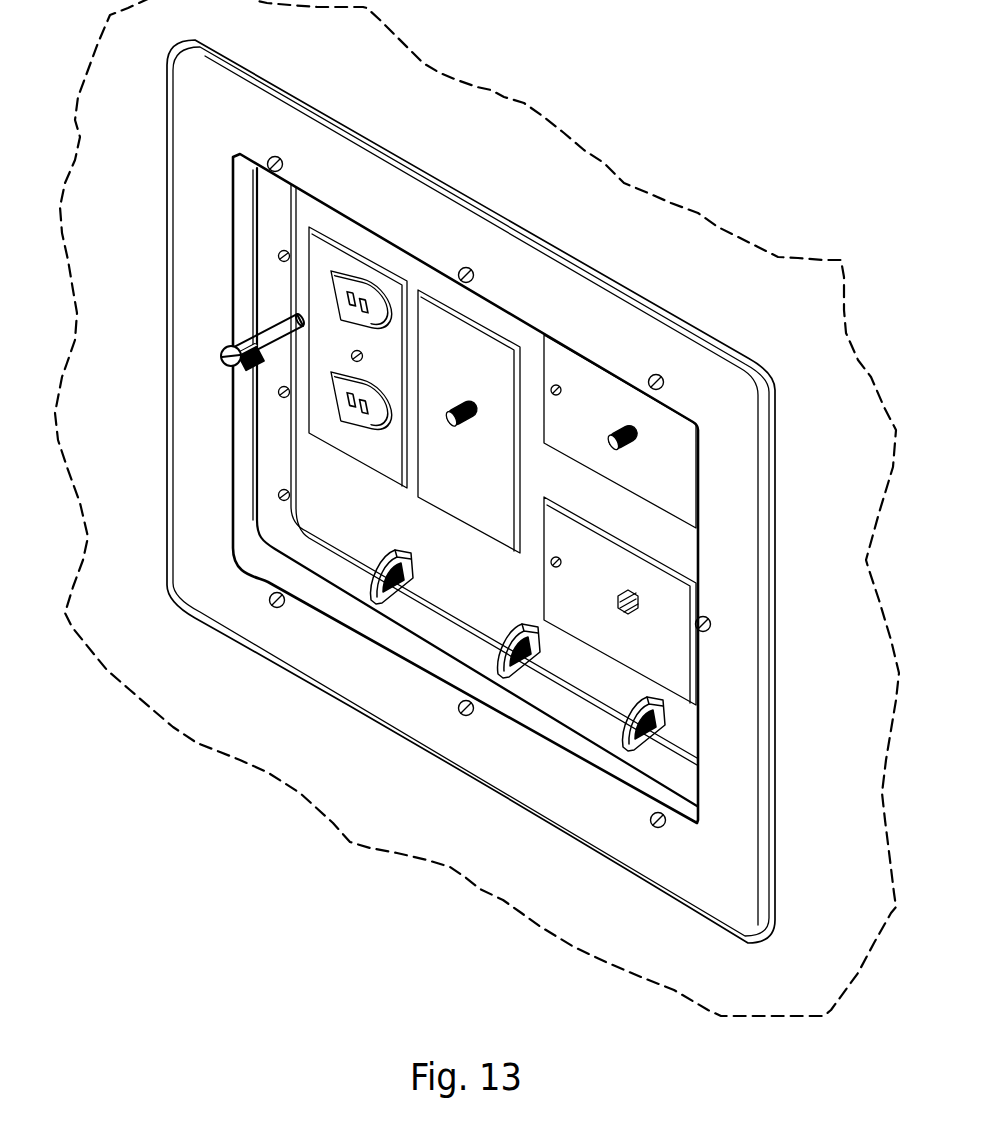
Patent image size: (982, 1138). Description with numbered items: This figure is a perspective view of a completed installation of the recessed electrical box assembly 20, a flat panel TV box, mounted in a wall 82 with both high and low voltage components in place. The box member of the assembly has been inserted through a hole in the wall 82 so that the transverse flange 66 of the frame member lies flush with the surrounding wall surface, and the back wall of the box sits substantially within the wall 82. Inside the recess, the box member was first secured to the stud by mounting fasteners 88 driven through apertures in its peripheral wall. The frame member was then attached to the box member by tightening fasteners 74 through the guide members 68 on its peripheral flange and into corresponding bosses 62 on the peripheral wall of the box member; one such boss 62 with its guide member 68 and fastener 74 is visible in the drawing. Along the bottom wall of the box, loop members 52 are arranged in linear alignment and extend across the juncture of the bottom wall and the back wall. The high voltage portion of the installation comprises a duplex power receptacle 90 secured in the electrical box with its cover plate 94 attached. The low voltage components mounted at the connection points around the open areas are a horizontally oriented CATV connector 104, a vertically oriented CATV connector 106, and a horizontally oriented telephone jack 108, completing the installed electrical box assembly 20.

The electrical box assembly 20 is at (105, 217).
The loop members 52 is at (413, 564).
The boss 62 is at (262, 328).
The transverse flange 66 is at (719, 490).
The guide member 68 is at (235, 346).
The fasteners 74 is at (461, 711).
The wall 82 is at (779, 320).
The mounting fasteners 88 is at (287, 506).
The duplex power receptacle 90 is at (354, 276).
The cover plate 94 is at (340, 440).
The horizontally oriented CATV connector 104 is at (578, 417).
The vertically oriented CATV connector 106 is at (441, 384).
The horizontally oriented telephone jack 108 is at (566, 609).